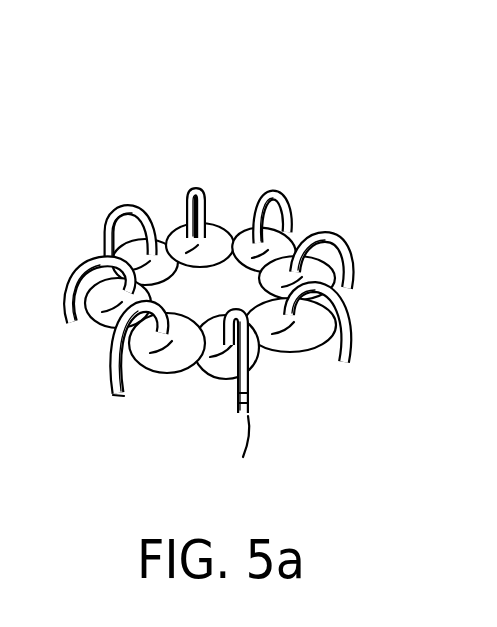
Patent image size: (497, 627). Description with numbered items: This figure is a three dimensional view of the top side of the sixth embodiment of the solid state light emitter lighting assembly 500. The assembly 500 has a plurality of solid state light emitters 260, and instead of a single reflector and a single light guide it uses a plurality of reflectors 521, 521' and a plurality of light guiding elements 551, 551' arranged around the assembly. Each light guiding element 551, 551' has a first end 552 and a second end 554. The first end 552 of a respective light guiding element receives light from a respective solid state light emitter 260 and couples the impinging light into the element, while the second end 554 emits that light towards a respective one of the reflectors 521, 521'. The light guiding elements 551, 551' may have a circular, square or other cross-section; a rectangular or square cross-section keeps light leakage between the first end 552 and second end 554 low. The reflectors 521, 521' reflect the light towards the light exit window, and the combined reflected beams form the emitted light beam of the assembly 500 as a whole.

The solid state light emitter lighting assembly 500 is at (114, 82).
The reflector 521 is at (338, 324).
The reflector 521' is at (349, 268).
The light guiding element 551 is at (255, 369).
The light guiding element 551' is at (169, 368).
The second end 554 is at (137, 341).
The first end 552 is at (104, 400).
The solid state light emitter 260 is at (243, 457).